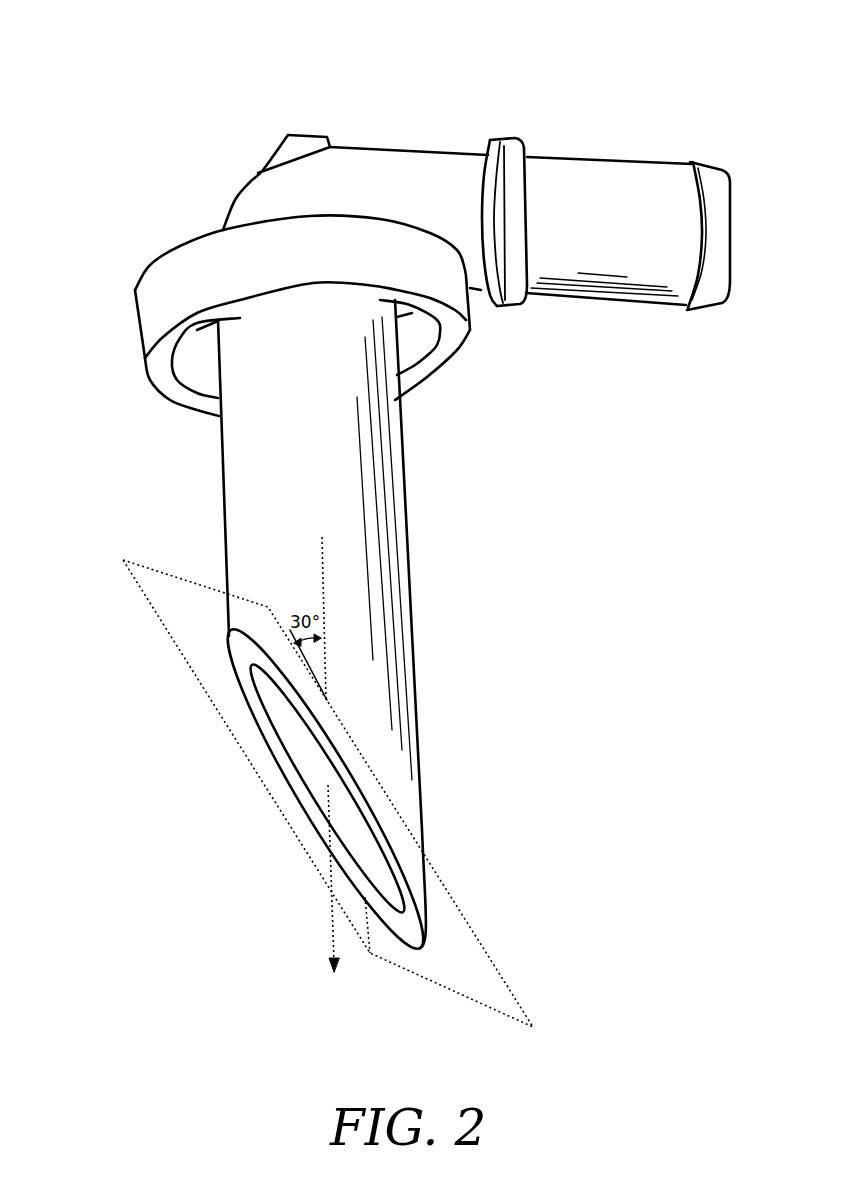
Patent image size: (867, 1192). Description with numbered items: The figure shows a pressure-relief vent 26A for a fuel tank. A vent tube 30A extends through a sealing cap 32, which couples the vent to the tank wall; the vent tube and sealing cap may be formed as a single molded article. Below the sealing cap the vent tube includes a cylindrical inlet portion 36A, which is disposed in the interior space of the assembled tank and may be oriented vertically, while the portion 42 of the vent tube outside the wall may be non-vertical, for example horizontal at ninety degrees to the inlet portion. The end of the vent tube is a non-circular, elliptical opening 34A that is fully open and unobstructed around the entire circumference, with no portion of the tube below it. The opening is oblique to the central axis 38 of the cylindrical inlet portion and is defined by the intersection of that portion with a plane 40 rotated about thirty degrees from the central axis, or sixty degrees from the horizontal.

The pressure-relief vent 26A is at (93, 115).
The vent tube 30A is at (245, 183).
The portion of the vent tube outside the wall 42 is at (415, 150).
The sealing cap 32 is at (138, 330).
The cylindrical inlet portion 36A is at (400, 517).
The non-circular opening 34A is at (298, 738).
The central axis 38 is at (346, 769).
The plane 40 is at (180, 620).